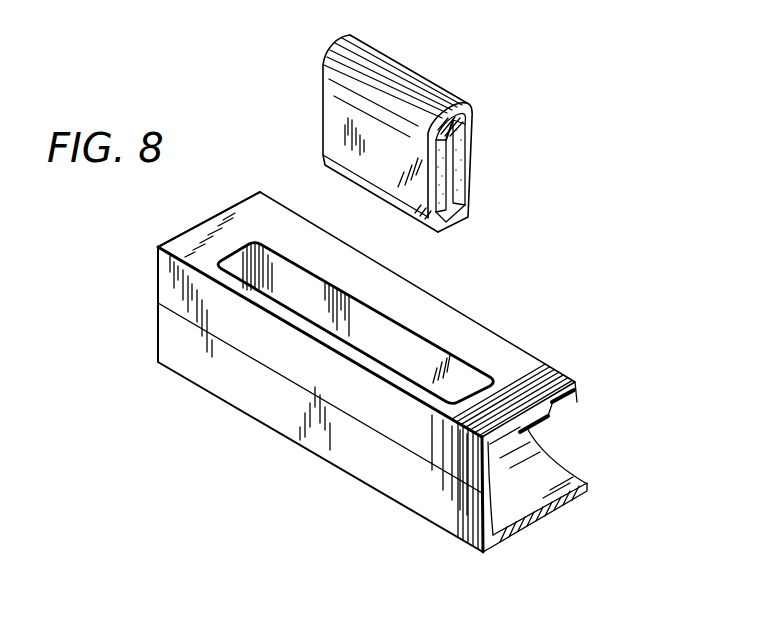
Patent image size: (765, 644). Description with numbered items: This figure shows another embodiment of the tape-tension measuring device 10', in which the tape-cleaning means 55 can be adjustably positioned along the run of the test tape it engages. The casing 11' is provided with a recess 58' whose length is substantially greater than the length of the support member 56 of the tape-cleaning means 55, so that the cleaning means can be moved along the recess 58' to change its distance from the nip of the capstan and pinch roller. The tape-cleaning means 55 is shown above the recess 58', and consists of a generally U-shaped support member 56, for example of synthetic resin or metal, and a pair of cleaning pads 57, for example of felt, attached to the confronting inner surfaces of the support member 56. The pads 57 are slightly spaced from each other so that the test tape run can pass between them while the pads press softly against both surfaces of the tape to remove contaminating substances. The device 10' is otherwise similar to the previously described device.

The tape-tension measuring device 10' is at (392, 293).
The casing 11' is at (392, 372).
The tape-cleaning means 55 is at (433, 75).
The U-shaped support member 56 is at (463, 107).
The cleaning pads 57 is at (453, 163).
The recess 58' is at (373, 322).